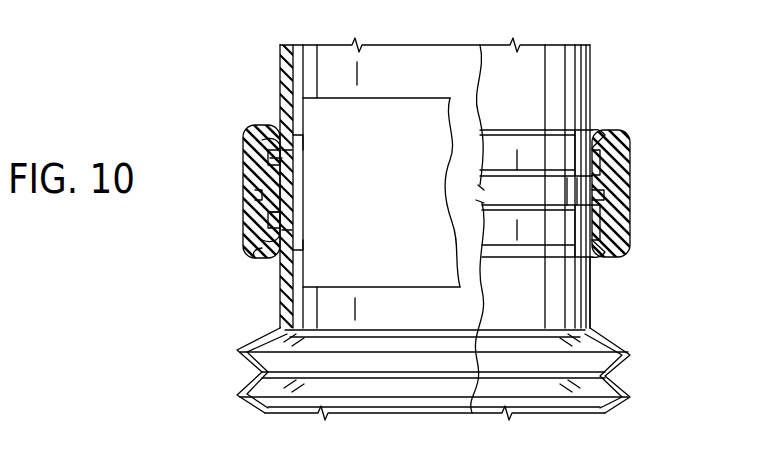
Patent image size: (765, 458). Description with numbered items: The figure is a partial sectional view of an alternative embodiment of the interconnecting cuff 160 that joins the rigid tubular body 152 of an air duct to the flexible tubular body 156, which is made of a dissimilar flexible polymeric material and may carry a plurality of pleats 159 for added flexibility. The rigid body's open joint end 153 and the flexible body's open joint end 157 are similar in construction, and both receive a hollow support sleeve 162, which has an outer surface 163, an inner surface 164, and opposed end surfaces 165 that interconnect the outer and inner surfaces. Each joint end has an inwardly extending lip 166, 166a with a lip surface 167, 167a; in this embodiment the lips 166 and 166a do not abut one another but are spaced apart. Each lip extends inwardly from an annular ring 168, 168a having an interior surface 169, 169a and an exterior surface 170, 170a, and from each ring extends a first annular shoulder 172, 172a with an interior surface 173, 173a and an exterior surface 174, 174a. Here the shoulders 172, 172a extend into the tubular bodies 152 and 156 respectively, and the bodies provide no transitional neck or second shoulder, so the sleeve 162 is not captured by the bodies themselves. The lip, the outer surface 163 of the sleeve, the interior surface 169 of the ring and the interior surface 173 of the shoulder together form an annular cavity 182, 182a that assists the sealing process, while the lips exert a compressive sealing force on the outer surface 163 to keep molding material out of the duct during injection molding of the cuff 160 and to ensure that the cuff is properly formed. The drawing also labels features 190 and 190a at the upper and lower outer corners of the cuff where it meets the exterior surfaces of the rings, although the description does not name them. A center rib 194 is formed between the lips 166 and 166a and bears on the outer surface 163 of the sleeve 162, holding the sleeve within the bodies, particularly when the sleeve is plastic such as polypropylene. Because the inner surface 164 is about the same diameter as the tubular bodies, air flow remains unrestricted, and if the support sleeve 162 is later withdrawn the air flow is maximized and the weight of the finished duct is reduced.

The tubular body 152 is at (597, 62).
The open joint end 153 is at (589, 110).
The flexible tubular body 156 is at (628, 380).
The open joint end 157 is at (590, 300).
The pleats 159 is at (573, 407).
The interconnecting cuff 160 is at (638, 160).
The support sleeve 162 is at (405, 92).
The outer surface 163 is at (597, 222).
The inner surface 164 is at (258, 195).
The end surfaces 165 is at (466, 92).
The inwardly extending lip 166 is at (275, 160).
The inwardly extending lip 166a is at (272, 213).
The lip surface 167 is at (482, 186).
The lip surface 167a is at (477, 201).
The annular ring 168 is at (265, 146).
The annular ring 168a is at (265, 227).
The interior surface 169 is at (288, 153).
The interior surface 169a is at (283, 228).
The exterior surface 170 is at (612, 150).
The exterior surface 170a is at (602, 218).
The annular shoulder 172 is at (270, 127).
The annular shoulder 172a is at (267, 258).
The interior surface 173 is at (300, 150).
The interior surface 173a is at (300, 248).
The exterior surface 174 is at (520, 133).
The exterior surface 174a is at (533, 252).
The annular cavity 182 is at (275, 156).
The annular cavity 182a is at (273, 217).
The upper chamfer 190 is at (604, 124).
The lower chamfer 190a is at (596, 259).
The center rib 194 is at (583, 195).